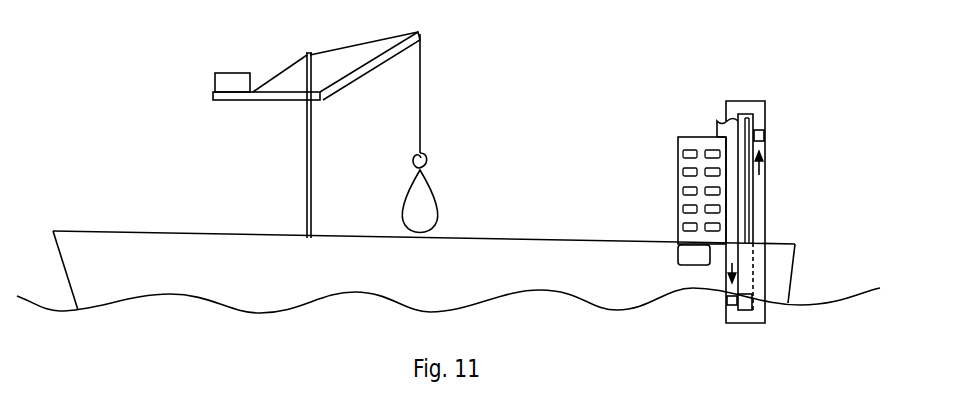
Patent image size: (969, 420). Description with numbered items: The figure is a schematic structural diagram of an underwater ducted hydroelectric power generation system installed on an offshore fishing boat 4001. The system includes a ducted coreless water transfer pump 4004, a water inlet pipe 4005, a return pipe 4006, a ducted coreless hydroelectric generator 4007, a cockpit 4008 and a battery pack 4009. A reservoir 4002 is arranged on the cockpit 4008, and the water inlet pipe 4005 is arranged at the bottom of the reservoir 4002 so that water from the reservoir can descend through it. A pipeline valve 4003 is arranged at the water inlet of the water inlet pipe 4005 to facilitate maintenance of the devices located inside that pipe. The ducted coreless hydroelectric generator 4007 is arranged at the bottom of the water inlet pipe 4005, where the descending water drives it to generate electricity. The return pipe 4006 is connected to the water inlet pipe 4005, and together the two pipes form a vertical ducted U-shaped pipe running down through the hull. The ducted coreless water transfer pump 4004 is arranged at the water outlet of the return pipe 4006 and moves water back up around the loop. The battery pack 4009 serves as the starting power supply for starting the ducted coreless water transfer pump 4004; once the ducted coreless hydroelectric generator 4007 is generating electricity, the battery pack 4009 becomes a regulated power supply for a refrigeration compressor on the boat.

The offshore fishing boat 4001 is at (175, 232).
The reservoir 4002 is at (722, 141).
The pipeline valve 4003 is at (724, 137).
The ducted coreless water transfer pump 4004 is at (763, 133).
The water inlet pipe 4005 is at (766, 170).
The return pipe 4006 is at (738, 243).
The ducted coreless hydroelectric generator 4007 is at (738, 297).
The cockpit 4008 is at (677, 192).
The battery pack 4009 is at (677, 245).